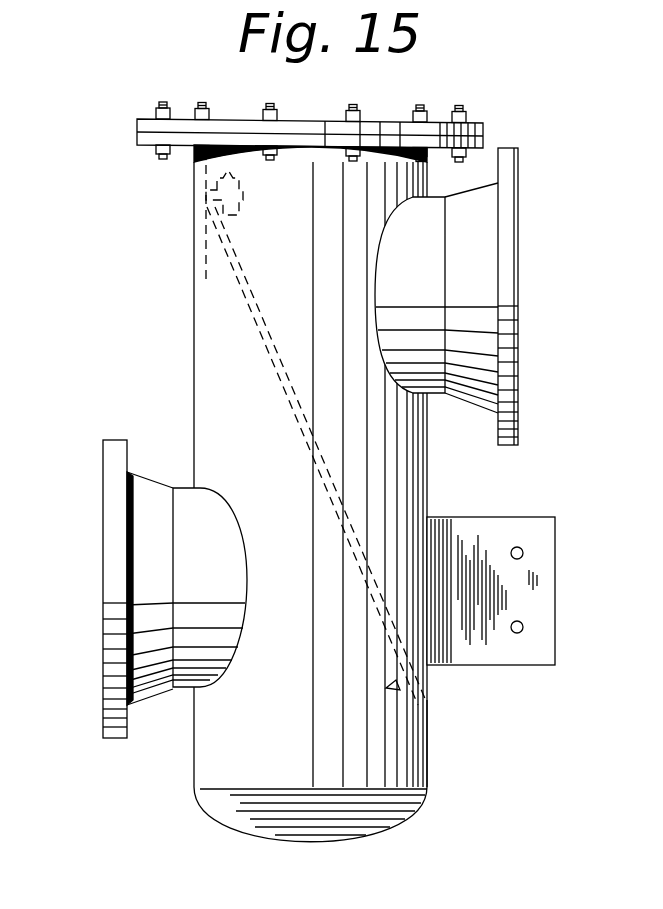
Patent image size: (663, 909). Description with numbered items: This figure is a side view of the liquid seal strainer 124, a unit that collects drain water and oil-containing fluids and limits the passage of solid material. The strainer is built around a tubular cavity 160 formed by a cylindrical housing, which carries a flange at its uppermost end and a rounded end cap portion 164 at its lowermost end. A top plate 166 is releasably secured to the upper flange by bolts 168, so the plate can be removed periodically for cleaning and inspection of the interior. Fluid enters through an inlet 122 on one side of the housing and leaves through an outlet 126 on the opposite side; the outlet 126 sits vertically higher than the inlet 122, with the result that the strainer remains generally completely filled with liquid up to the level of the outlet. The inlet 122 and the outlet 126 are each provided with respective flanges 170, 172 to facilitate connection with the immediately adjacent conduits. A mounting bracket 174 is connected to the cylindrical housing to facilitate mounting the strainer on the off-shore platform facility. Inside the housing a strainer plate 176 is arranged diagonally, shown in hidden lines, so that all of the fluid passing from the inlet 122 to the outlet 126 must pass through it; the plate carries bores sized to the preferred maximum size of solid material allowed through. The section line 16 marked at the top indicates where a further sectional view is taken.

The section line 16- 16 is at (53, 47).
The inlet 122 is at (93, 724).
The liquid seal strainer 124 is at (440, 759).
The outlet 126 is at (528, 381).
The tubular cavity 160 is at (422, 467).
The rounded end cap portion 164 is at (290, 842).
The top plate 166 is at (300, 121).
The bolts 168 is at (165, 106).
The inlet flange 170 is at (103, 577).
The outlet flange 172 is at (516, 262).
The mounting bracket 174 is at (530, 653).
The strainer plate 176 is at (282, 417).